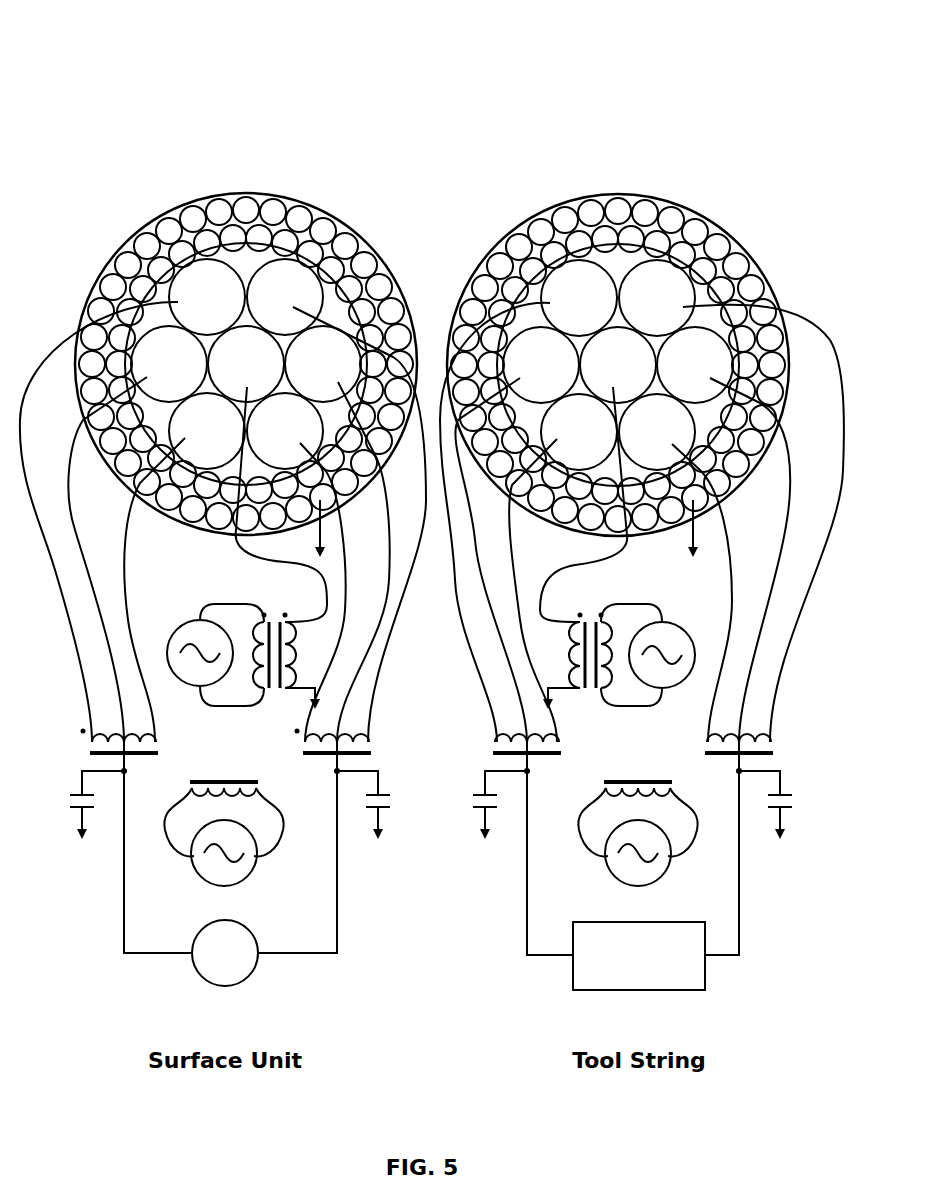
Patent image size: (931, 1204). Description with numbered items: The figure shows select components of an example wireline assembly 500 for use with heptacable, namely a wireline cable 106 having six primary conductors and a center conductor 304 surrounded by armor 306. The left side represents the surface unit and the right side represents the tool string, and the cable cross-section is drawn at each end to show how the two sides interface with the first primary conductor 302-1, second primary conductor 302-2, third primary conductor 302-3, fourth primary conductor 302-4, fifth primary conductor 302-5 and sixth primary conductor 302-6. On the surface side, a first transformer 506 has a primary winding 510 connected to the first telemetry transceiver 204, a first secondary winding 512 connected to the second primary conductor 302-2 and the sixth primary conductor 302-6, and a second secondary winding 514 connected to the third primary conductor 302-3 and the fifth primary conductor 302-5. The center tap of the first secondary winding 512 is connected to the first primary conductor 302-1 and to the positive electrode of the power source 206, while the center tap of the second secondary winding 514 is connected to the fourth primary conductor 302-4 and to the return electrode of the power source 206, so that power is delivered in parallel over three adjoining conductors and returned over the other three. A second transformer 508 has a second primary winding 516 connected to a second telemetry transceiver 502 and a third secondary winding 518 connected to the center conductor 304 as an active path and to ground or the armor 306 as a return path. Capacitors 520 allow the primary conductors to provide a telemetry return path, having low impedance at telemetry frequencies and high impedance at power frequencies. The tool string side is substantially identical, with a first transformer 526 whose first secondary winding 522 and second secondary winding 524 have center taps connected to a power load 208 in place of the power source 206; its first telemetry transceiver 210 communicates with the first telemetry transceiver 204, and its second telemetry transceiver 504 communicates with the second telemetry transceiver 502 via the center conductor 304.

The wireline assembly 500 is at (140, 36).
The wireline cable 106 is at (350, 237).
The armor 306 is at (123, 262).
The first primary conductor 302-1 is at (137, 370).
The second primary conductor 302-2 is at (175, 303).
The third primary conductor 302-3 is at (253, 303).
The fourth primary conductor 302-4 is at (291, 370).
The fifth primary conductor 302-5 is at (253, 437).
The sixth primary conductor 302-6 is at (175, 437).
The center conductor 304 is at (226, 381).
The second telemetry transceiver 502 is at (188, 623).
The second transformer 508 is at (263, 612).
The second primary winding 516 is at (238, 706).
The third secondary winding 518 is at (308, 683).
The second telemetry transceiver 504 is at (678, 628).
The first secondary winding 512 is at (160, 744).
The second secondary winding 514 is at (375, 744).
The first secondary winding 522 is at (560, 745).
The second secondary winding 524 is at (710, 745).
The capacitors 520 is at (76, 786).
The first transformer 506 is at (150, 832).
The primary winding 510 is at (262, 800).
The first telemetry transceiver 204 is at (197, 876).
The power source 206 is at (228, 990).
The first transformer 526 is at (547, 822).
The first telemetry transceiver 210 is at (612, 876).
The power load 208 is at (640, 990).